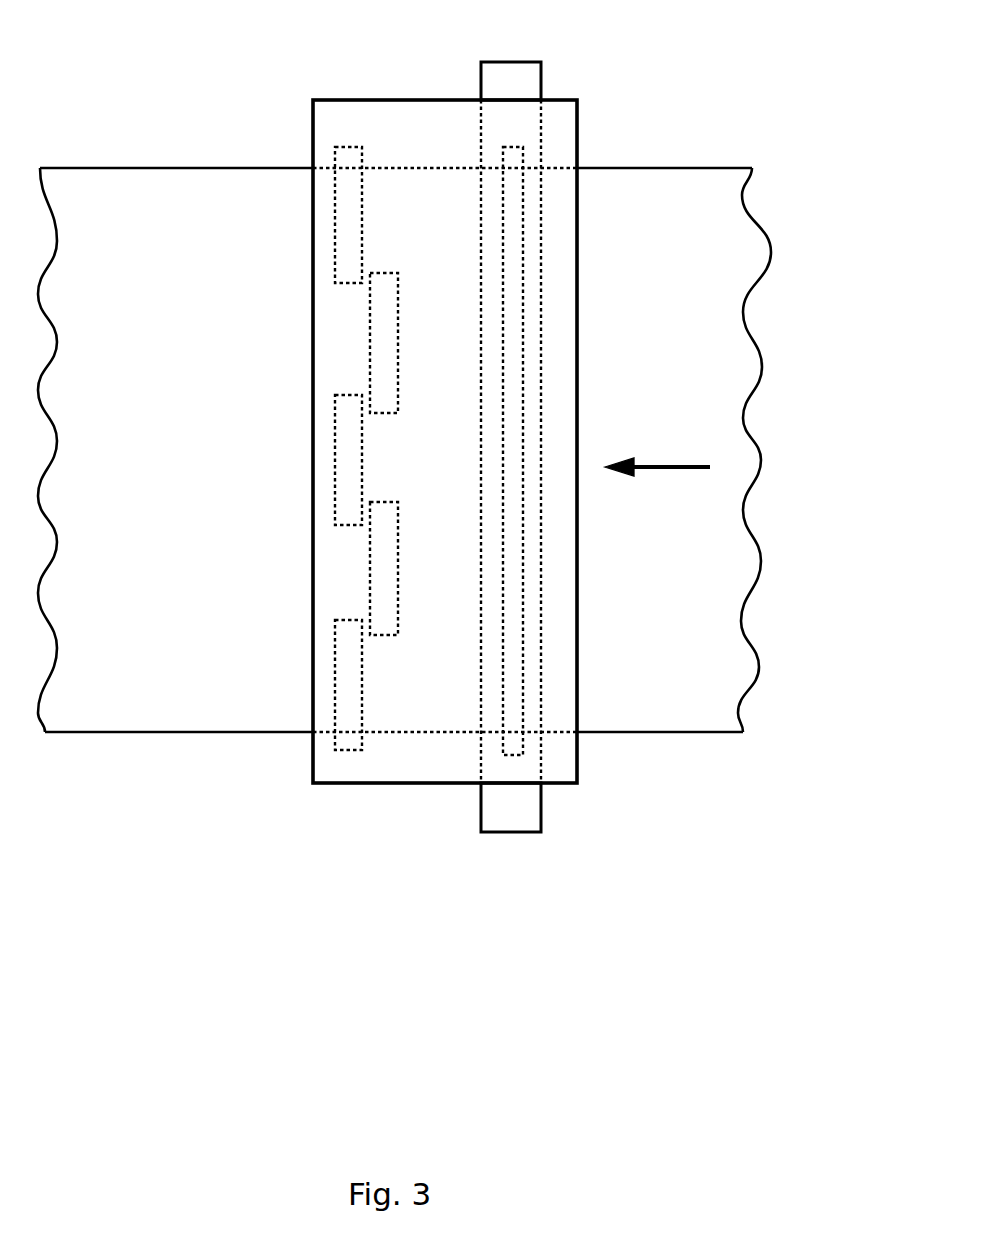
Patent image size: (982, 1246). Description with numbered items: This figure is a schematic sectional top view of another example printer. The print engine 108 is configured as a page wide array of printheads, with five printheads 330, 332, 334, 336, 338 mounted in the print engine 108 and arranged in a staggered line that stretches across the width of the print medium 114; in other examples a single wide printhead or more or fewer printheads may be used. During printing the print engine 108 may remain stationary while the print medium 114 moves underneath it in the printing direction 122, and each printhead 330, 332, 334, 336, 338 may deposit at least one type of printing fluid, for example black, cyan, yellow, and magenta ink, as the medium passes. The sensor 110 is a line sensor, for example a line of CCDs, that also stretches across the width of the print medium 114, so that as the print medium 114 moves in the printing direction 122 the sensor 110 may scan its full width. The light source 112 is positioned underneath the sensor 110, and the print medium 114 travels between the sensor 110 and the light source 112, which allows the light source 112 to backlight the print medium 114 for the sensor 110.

The print engine 108 is at (337, 100).
The sensor 110 is at (525, 603).
The light source 112 is at (542, 76).
The print medium 114 is at (663, 267).
The printing direction 122 is at (657, 453).
The printhead 330 is at (335, 228).
The printhead 332 is at (368, 332).
The printhead 334 is at (335, 458).
The printhead 336 is at (368, 570).
The printhead 338 is at (335, 665).